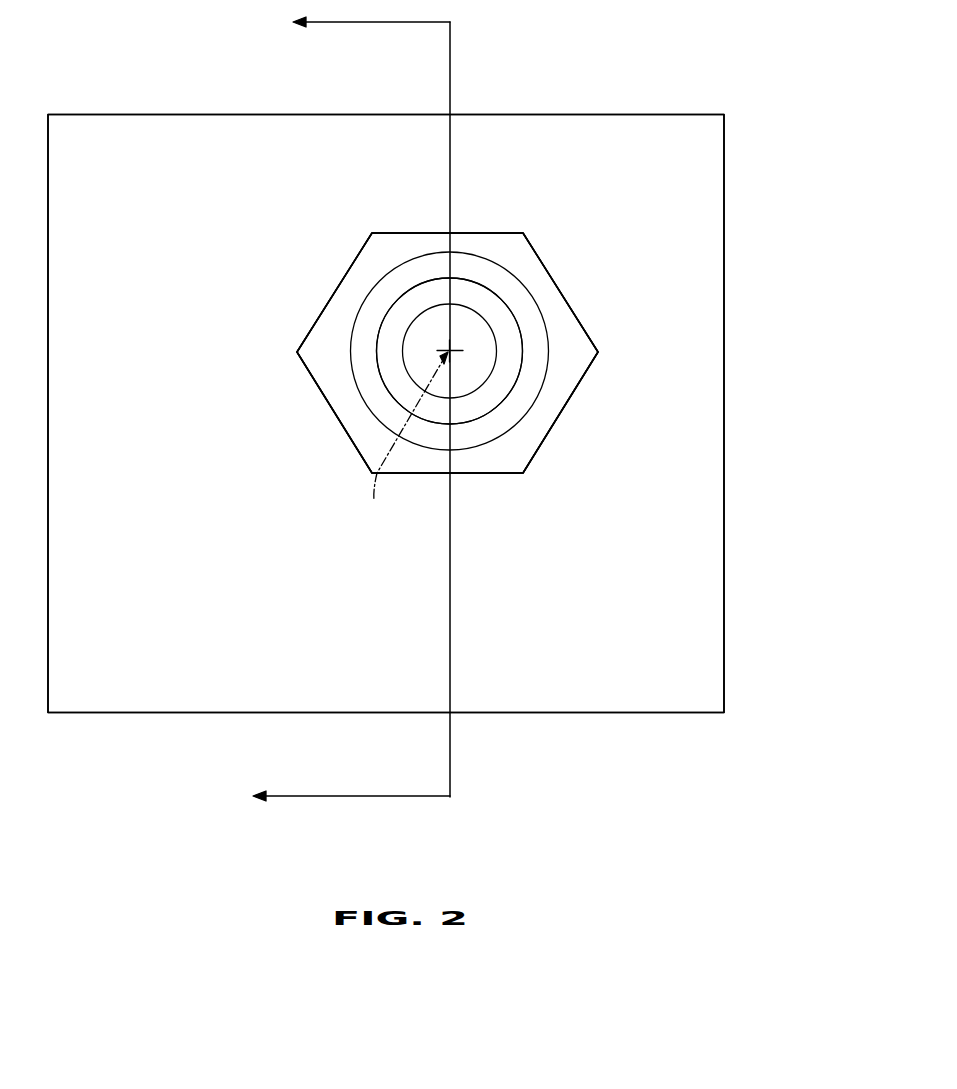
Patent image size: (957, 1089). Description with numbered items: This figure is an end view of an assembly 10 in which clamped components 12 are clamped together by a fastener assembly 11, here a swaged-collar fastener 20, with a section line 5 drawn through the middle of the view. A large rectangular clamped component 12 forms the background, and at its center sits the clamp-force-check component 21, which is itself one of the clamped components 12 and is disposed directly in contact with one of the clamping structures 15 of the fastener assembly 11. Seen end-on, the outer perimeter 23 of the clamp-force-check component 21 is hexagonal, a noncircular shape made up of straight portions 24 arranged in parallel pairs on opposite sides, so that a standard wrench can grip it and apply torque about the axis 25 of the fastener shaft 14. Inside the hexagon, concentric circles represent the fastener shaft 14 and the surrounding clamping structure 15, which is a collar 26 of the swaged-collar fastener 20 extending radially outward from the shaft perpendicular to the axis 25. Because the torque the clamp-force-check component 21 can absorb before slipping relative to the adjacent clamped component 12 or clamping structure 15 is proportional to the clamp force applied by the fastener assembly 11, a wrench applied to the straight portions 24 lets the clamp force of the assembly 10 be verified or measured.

The section line 5- 5 is at (361, 409).
The assembly 10 is at (618, 137).
The fastener assembly 11 is at (487, 298).
The clamped component 12 is at (665, 232).
The fastener shaft 14 is at (421, 352).
The clamping structure 15 is at (527, 300).
The swaged-collar fastener 20 is at (418, 315).
The clamp-force-check component 21 is at (532, 433).
The outer perimeter 23 is at (408, 233).
The straight portion 24 is at (475, 233).
The axis 25 is at (374, 500).
The collar 26 is at (383, 345).